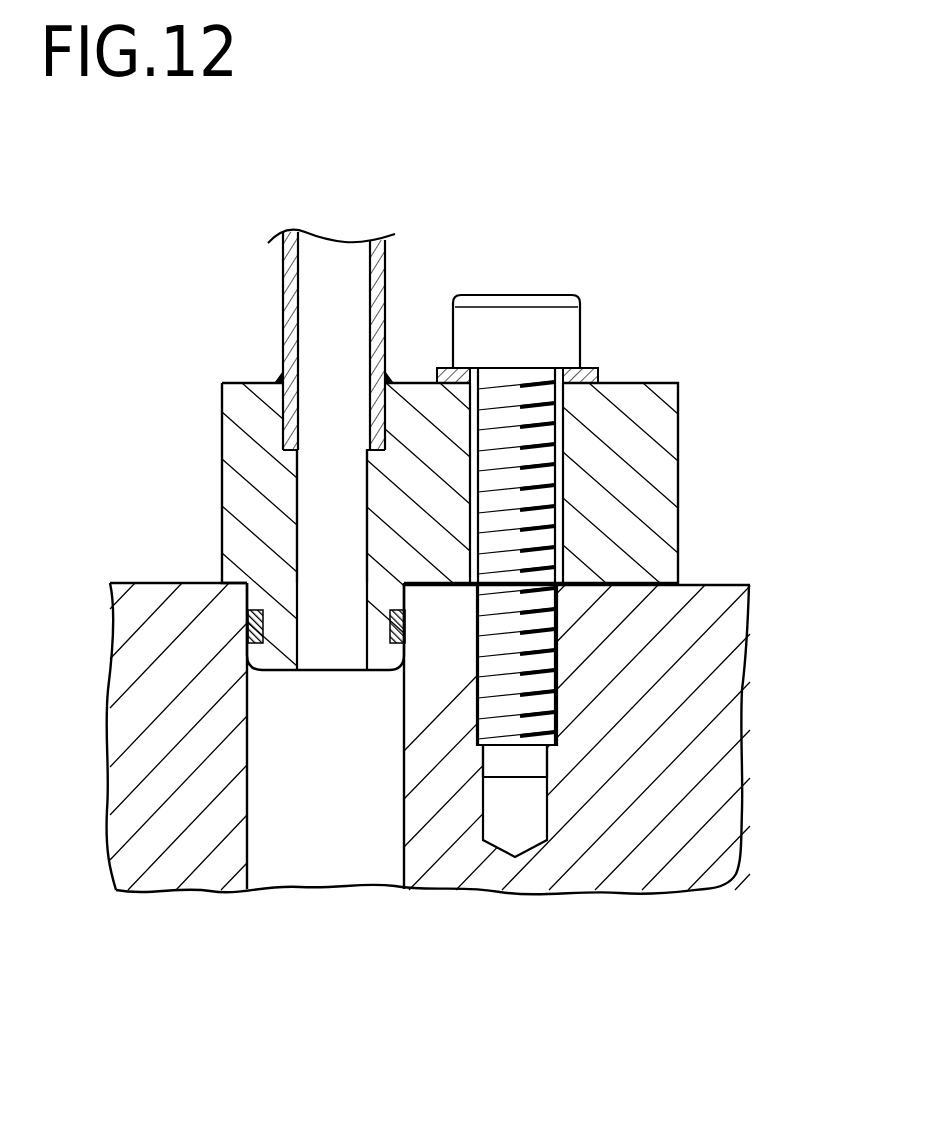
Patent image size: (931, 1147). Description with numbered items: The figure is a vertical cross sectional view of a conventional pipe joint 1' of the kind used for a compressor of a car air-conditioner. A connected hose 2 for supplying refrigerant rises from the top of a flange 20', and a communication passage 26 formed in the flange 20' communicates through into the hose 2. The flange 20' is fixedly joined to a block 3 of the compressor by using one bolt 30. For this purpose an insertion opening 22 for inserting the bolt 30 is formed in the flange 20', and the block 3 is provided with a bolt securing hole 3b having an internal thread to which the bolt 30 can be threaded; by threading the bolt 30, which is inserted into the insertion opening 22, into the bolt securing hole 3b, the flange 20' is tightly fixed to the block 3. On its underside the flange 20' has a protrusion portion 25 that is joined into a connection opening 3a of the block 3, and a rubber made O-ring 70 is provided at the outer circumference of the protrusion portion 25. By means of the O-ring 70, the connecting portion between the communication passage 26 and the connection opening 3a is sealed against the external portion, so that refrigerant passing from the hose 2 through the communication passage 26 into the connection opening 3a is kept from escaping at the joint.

The pipe joint 1' is at (458, 475).
The hose 2 is at (283, 313).
The block 3 is at (730, 778).
The connection opening 3a is at (250, 720).
The bolt securing hole 3b is at (557, 700).
The flange 20' is at (509, 477).
The insertion opening 22 is at (563, 494).
The protrusion portion 25 is at (379, 650).
The communication passage 26 is at (296, 525).
The bolt 30 is at (522, 325).
The O-ring 70 is at (393, 605).